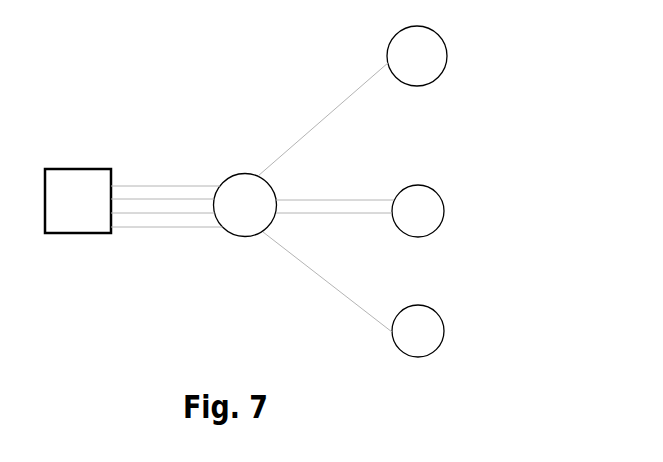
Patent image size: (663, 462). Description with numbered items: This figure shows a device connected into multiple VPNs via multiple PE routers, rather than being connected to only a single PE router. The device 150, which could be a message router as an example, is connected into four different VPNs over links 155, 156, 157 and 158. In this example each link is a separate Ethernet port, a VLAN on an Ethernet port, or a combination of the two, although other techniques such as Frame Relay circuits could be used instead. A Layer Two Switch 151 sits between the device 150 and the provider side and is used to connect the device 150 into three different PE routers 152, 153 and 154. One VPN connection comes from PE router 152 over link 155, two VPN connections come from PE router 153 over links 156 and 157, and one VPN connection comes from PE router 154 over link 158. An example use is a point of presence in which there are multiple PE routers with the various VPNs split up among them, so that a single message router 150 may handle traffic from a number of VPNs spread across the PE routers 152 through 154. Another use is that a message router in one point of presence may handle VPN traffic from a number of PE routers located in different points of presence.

The device 150 is at (75, 169).
The Layer 2 Switch 151 is at (240, 237).
The PE router 152 is at (447, 53).
The PE router 153 is at (443, 211).
The PE router 154 is at (443, 331).
The link 155 is at (138, 186).
The link 156 is at (197, 199).
The link 157 is at (204, 213).
The link 158 is at (132, 227).